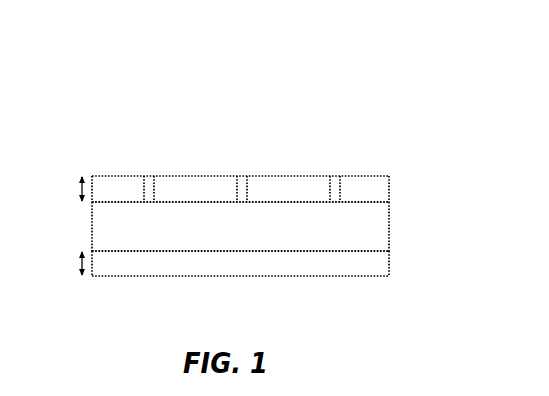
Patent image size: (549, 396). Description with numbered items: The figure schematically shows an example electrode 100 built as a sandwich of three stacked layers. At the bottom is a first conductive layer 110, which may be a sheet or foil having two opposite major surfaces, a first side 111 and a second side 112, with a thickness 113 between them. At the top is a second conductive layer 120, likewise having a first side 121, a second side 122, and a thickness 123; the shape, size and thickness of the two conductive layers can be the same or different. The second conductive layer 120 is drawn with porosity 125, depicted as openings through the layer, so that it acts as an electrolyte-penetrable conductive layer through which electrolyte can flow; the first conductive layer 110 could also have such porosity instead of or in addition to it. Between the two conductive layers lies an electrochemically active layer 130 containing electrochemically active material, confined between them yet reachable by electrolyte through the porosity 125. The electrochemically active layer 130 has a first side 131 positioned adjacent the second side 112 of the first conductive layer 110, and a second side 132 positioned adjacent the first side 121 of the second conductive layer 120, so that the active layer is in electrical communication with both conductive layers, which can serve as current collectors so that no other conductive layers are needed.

The electrode 100 is at (343, 74).
The first conductive layer 110 is at (361, 265).
The first side 111 is at (96, 277).
The second side 112 is at (96, 253).
The thickness 113 is at (63, 263).
The second conductive layer 120 is at (357, 185).
The first side 121 is at (96, 203).
The second side 122 is at (100, 175).
The thickness 123 is at (65, 189).
The porosity 125 is at (148, 178).
The electrochemically active layer 130 is at (385, 233).
The first side 131 is at (383, 252).
The second side 132 is at (382, 200).